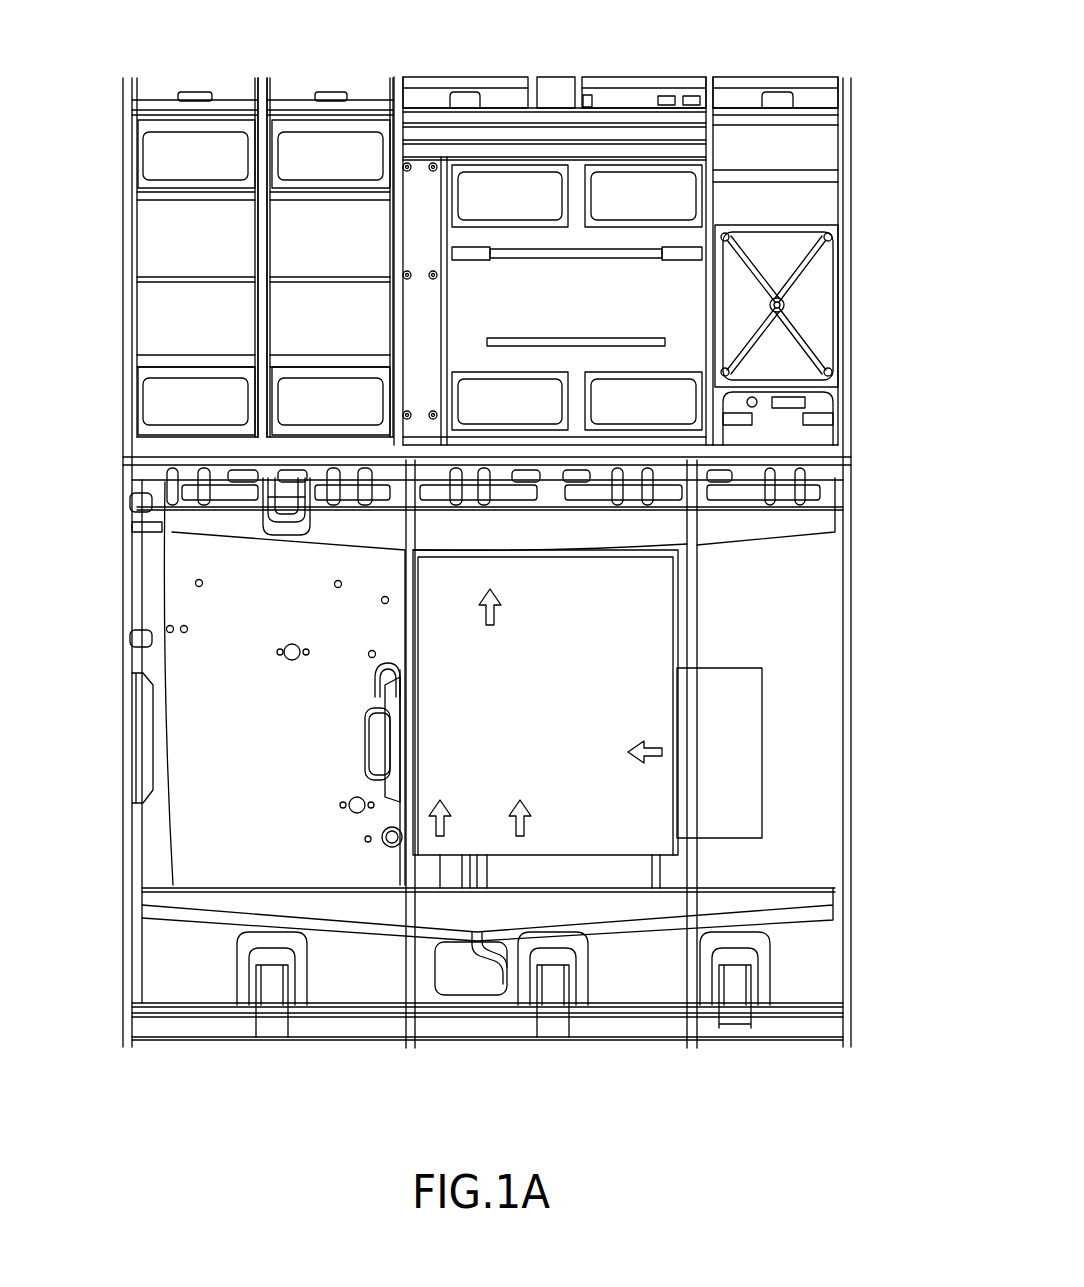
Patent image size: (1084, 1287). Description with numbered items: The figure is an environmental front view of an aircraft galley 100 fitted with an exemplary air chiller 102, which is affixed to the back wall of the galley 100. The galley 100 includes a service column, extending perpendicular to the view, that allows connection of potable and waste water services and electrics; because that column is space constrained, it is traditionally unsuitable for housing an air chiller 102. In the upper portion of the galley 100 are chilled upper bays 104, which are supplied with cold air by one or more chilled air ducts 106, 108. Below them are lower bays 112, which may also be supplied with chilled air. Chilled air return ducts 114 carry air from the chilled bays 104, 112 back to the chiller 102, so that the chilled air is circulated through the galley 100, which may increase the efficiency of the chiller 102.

The aircraft galley 100 is at (868, 63).
The air chiller 102 is at (661, 622).
The chilled upper bays 104 is at (150, 257).
The chilled air duct 106 is at (162, 162).
The chilled air duct 108 is at (162, 400).
The lower bays 112 is at (192, 817).
The chilled air return ducts 114 is at (745, 752).